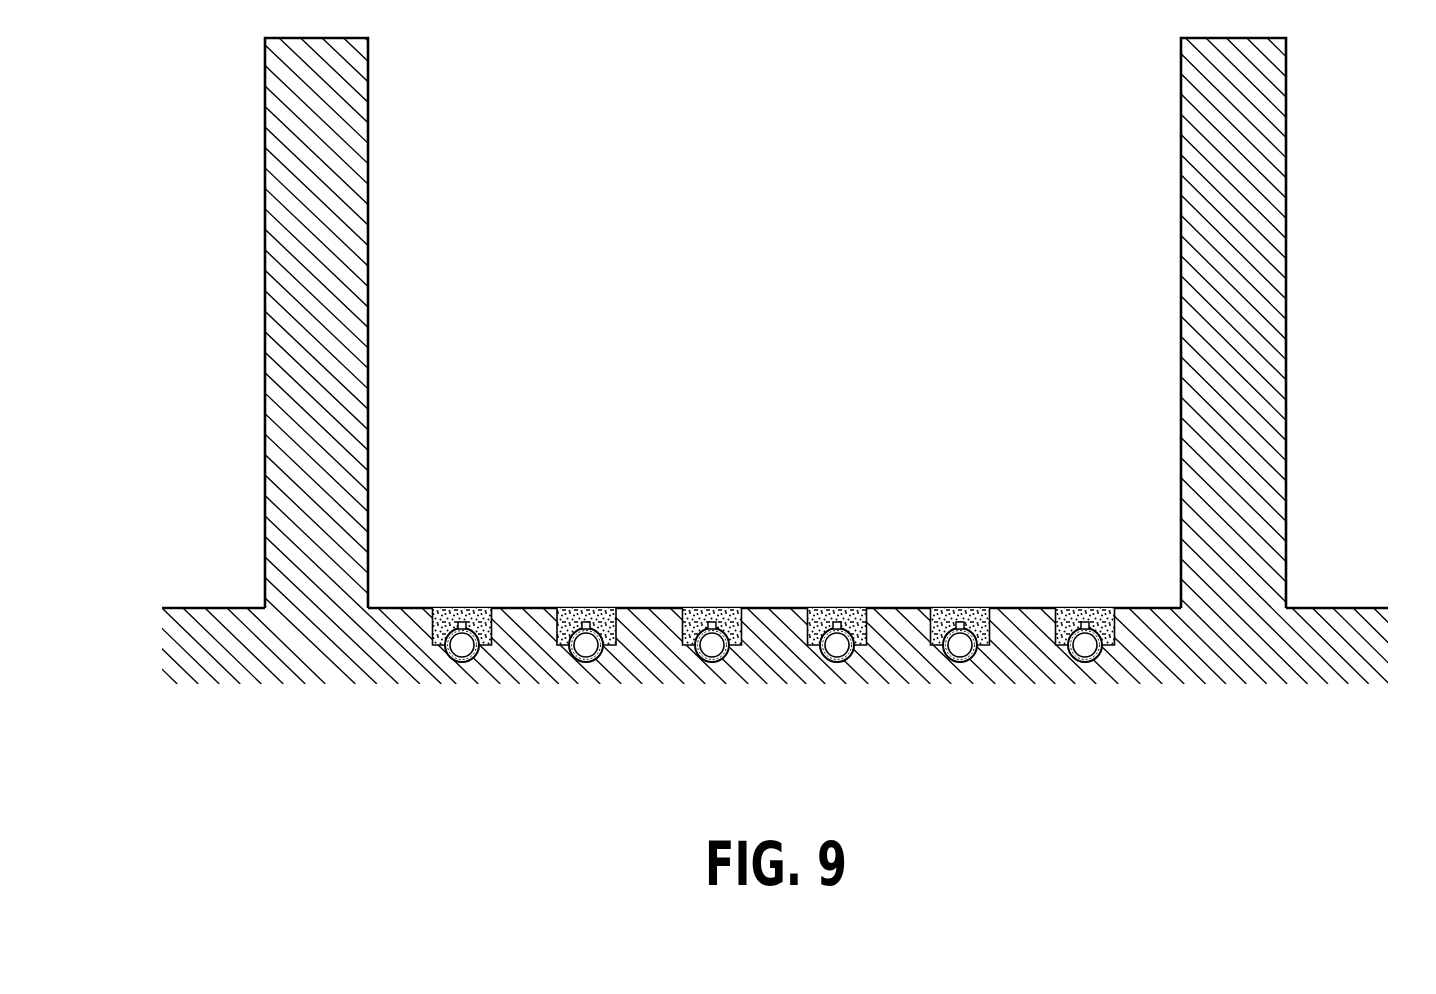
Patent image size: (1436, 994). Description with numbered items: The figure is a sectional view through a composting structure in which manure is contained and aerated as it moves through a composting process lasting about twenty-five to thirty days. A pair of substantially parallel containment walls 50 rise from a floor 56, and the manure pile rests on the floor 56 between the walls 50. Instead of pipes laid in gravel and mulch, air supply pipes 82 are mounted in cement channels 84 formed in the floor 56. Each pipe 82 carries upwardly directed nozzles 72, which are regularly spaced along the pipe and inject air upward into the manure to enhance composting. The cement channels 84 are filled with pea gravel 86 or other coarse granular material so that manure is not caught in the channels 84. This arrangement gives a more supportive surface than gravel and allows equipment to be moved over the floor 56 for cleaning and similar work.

The containment wall 50 is at (268, 404).
The floor 56 is at (780, 608).
The nozzle 72 is at (709, 620).
The pipe 82 is at (451, 657).
The cement channel 84 is at (552, 630).
The pea gravel 86 is at (573, 620).